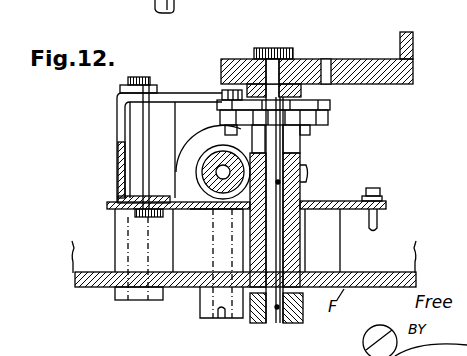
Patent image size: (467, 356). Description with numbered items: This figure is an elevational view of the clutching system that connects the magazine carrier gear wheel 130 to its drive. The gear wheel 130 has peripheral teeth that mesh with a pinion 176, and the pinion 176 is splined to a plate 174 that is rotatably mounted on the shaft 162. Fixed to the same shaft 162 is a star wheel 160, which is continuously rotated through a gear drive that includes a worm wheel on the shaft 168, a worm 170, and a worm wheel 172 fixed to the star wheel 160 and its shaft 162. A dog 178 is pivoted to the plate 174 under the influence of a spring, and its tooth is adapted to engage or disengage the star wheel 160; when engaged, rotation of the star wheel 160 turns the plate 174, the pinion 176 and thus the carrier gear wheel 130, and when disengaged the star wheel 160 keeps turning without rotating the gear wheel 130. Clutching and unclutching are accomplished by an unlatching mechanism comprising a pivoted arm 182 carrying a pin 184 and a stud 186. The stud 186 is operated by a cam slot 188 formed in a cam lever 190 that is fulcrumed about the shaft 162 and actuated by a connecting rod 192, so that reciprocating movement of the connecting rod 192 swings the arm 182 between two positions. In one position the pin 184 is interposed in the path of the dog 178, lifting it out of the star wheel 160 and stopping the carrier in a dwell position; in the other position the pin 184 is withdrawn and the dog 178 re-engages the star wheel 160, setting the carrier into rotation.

The gear wheel 130 is at (414, 67).
The pinion 176 is at (240, 62).
The pin 184 is at (222, 106).
The dog 178 is at (315, 99).
The plate 174 is at (330, 117).
The star wheel 160 is at (306, 140).
The shaft 162 is at (275, 248).
The worm wheel 172 is at (306, 172).
The pivoted arm 182 is at (118, 125).
The stud 186 is at (133, 213).
The cam slot 188 is at (110, 205).
The shaft 168 is at (199, 135).
The worm 170 is at (205, 167).
The cam lever 190 is at (341, 204).
The connecting rod 192 is at (378, 221).